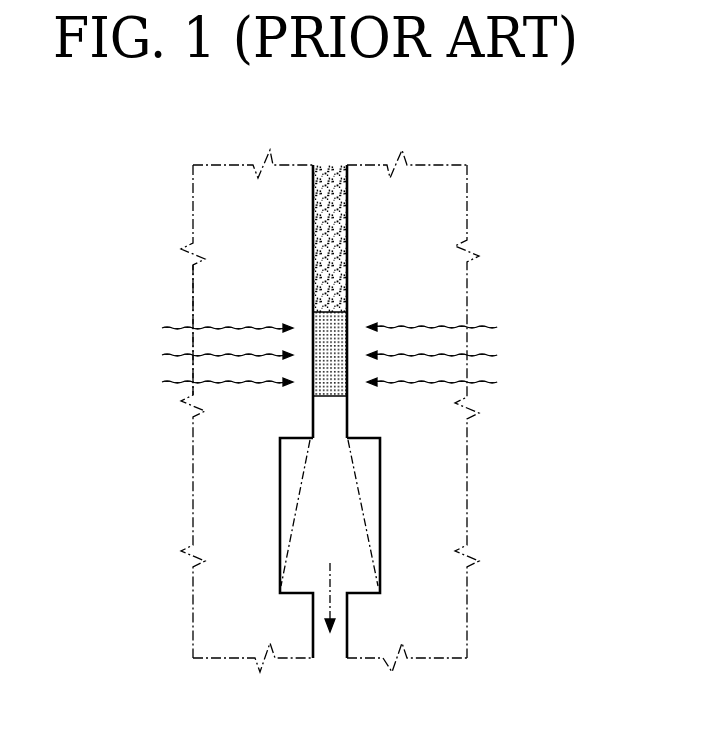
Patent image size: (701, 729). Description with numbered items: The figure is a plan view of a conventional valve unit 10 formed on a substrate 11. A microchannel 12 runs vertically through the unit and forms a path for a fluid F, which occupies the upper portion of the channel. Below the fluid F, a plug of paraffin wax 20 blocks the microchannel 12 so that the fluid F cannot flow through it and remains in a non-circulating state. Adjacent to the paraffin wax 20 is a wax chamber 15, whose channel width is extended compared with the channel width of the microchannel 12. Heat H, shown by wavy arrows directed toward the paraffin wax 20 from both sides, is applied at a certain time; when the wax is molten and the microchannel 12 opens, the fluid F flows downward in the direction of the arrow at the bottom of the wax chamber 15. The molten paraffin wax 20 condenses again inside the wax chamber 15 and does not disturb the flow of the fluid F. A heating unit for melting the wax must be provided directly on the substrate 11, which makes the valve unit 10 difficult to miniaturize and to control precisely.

The valve unit 10 is at (176, 164).
The substrate 11 is at (216, 223).
The microchannel 12 is at (349, 232).
The wax chamber 15 is at (382, 527).
The paraffin wax 20 is at (347, 327).
The fluid F is at (330, 180).
The heat H is at (330, 354).